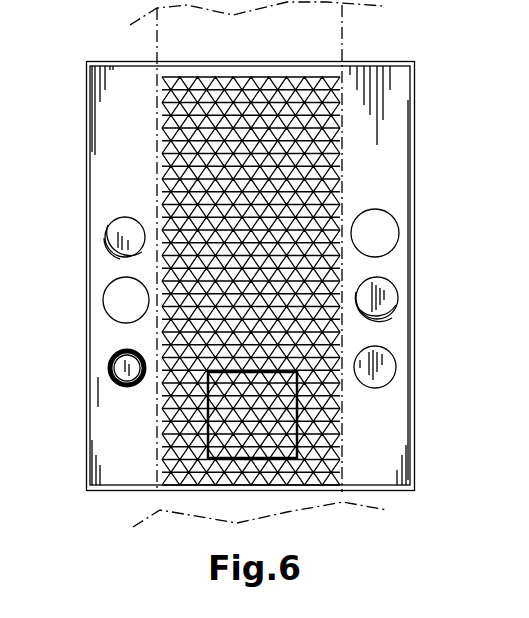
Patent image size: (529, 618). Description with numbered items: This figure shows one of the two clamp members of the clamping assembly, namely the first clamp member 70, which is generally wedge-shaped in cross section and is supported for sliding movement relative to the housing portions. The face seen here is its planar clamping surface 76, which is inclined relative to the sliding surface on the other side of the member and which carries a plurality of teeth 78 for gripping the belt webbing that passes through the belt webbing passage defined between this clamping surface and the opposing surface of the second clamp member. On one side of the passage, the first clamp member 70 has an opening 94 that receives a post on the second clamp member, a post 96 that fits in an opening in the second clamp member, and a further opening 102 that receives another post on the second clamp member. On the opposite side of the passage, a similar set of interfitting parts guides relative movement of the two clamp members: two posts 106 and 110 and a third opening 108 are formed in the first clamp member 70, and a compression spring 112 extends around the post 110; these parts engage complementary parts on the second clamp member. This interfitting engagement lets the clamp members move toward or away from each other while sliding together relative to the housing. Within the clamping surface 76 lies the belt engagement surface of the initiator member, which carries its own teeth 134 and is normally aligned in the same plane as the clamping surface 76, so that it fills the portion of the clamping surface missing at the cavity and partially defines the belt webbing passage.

The first clamp member 70 is at (193, 495).
The clamping surface 76 is at (382, 170).
The teeth 78 is at (305, 135).
The opening 94 is at (383, 232).
The post 96 is at (382, 297).
The opening 102 is at (383, 370).
The post 106 is at (113, 235).
The third opening 108 is at (112, 302).
The post 110 is at (117, 367).
The compression spring 112 is at (107, 387).
The teeth 134 is at (270, 437).